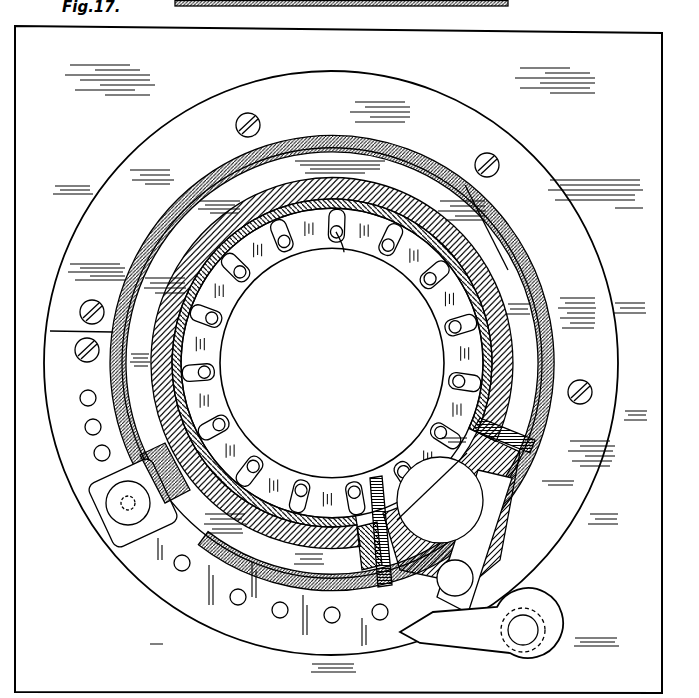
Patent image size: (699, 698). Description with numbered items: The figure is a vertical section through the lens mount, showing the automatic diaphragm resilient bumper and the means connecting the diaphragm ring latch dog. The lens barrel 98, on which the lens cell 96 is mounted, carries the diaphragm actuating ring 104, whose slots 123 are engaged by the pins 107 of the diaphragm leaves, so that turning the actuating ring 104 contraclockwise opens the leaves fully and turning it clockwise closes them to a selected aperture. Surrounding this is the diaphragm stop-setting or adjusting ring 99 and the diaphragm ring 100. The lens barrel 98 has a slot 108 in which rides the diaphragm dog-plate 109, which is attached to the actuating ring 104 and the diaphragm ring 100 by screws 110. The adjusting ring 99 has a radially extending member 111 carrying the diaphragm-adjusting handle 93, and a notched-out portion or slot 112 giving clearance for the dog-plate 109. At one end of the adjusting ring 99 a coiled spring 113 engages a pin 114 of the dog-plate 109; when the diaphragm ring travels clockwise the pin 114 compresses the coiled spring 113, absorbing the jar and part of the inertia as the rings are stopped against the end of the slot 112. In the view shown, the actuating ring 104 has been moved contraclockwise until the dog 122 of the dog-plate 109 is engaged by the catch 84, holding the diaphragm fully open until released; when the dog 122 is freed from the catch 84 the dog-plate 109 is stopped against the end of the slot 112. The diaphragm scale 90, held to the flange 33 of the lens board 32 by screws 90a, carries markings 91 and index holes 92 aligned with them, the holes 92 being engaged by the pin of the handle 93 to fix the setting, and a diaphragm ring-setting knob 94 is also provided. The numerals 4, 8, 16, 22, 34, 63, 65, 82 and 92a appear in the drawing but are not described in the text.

The hole 4 is at (325, 629).
The hole 8 is at (173, 574).
The hole 16 is at (86, 460).
The hole 22 is at (78, 430).
The lens board 32 is at (75, 394).
The flange 33 is at (525, 153).
The screw 34 is at (258, 116).
The hole 63 is at (224, 609).
The hole 65 is at (269, 624).
The pivot boss 82 is at (545, 610).
The catch 84 is at (483, 640).
The diaphragm scale 90 is at (210, 610).
The screws 90a is at (50, 331).
The markings 91 is at (90, 405).
The index holes 92 is at (86, 395).
The hole 92a is at (410, 640).
The diaphragm-adjusting handle 93 is at (115, 515).
The diaphragm ring-setting knob 94 is at (455, 555).
The lens cell 96 is at (508, 4).
The lens barrel 98 is at (490, 262).
The diaphragm stop-setting or adjusting ring 99 is at (420, 177).
The diaphragm ring 100 is at (540, 283).
The diaphragm actuating ring 104 is at (222, 392).
The pin 107 is at (240, 272).
The slot 108 is at (215, 488).
The diaphragm dog-plate 109 is at (500, 530).
The screws 110 is at (372, 482).
The radially extending member 111 is at (100, 498).
The notched-out portion or slot 112 is at (270, 520).
The coiled spring 113 is at (185, 495).
The pin 114 is at (360, 545).
The dog 122 is at (470, 578).
The slots 123 is at (345, 225).